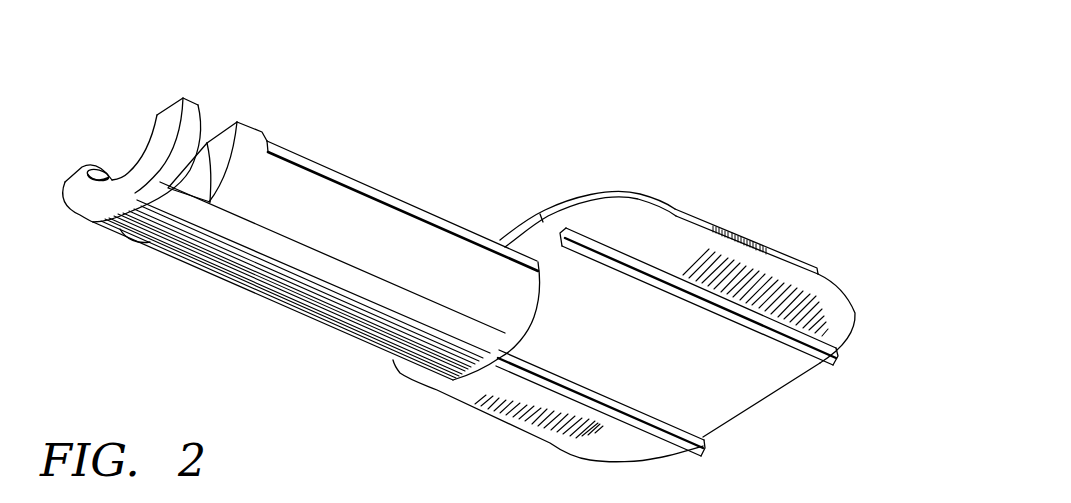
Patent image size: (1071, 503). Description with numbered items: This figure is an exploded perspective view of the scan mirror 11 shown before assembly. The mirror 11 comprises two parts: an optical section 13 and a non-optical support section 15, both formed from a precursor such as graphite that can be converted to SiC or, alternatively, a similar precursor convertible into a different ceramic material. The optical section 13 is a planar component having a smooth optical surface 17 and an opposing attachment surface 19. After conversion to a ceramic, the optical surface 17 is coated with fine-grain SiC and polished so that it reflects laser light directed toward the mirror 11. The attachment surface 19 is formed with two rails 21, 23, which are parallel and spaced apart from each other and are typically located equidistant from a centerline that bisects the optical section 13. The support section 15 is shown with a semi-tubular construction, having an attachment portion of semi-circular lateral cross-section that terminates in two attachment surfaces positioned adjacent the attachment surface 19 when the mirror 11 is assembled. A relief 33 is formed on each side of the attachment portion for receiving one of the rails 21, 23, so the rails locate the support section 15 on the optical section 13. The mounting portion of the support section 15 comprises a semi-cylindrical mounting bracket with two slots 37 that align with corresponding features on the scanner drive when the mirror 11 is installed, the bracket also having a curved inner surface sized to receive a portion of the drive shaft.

The mirror 11 is at (810, 70).
The optical section 13 is at (760, 225).
The non-optical support section 15 is at (316, 230).
The optical surface 17 is at (663, 198).
The attachment surface 19 is at (827, 315).
The rail 21 is at (836, 365).
The rail 23 is at (706, 452).
The relief 33 is at (293, 158).
The slot 37 is at (215, 117).